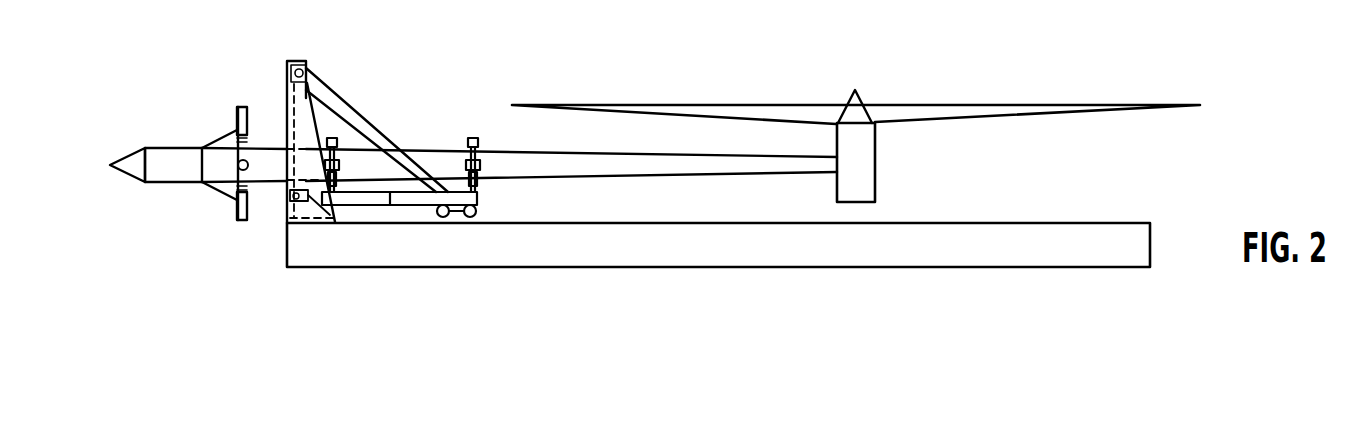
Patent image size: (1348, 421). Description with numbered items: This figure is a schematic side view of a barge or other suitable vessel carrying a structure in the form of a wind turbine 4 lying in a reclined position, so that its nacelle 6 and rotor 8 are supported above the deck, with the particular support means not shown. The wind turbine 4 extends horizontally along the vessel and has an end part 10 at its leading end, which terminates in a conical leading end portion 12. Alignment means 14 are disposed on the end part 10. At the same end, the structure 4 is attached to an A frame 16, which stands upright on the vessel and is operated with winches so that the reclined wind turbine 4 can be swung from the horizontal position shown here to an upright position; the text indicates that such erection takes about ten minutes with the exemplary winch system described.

The wind turbine 4 is at (715, 162).
The nacelle 6 is at (863, 172).
The rotor 8 is at (900, 113).
The end part 10 is at (177, 167).
The conical leading end portion 12 is at (137, 148).
The alignment means 14 is at (222, 135).
The A frame 16 is at (380, 138).